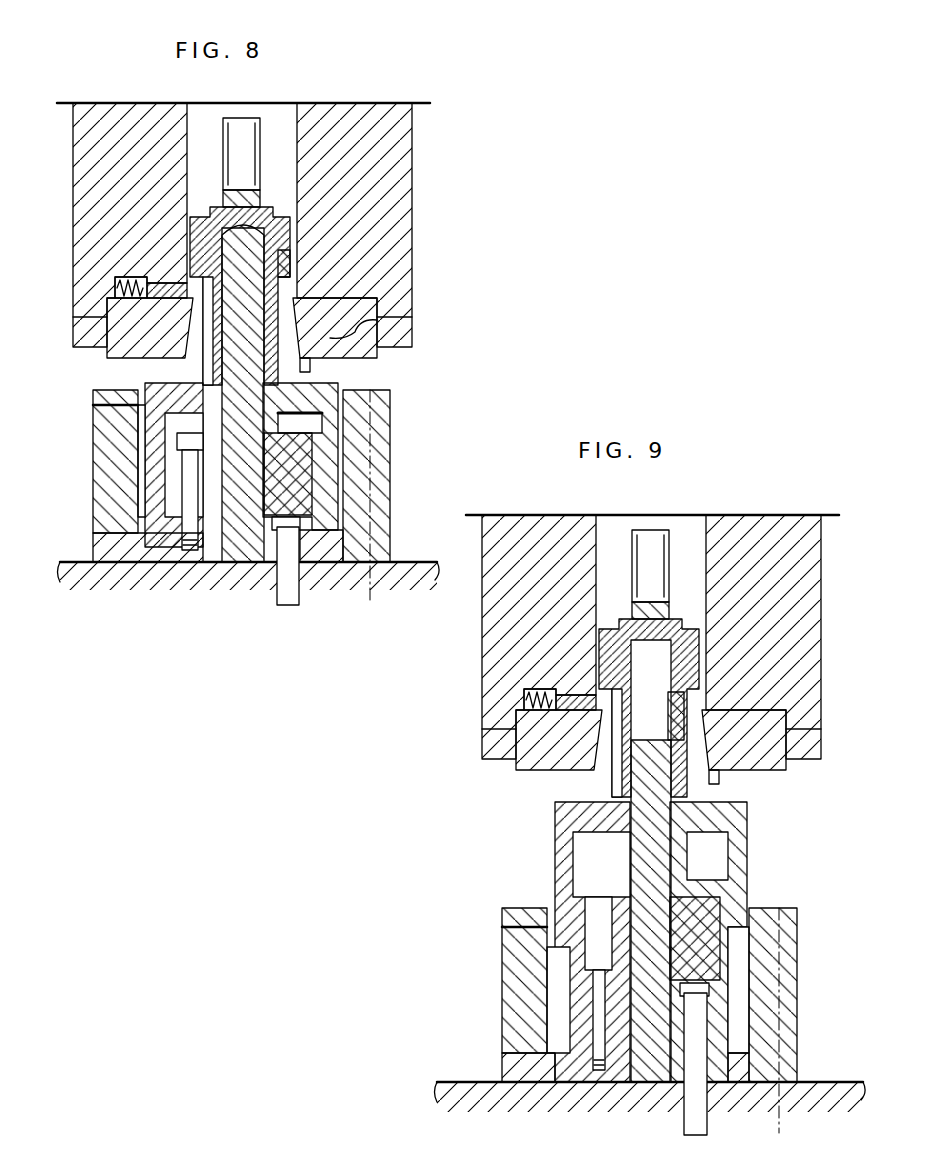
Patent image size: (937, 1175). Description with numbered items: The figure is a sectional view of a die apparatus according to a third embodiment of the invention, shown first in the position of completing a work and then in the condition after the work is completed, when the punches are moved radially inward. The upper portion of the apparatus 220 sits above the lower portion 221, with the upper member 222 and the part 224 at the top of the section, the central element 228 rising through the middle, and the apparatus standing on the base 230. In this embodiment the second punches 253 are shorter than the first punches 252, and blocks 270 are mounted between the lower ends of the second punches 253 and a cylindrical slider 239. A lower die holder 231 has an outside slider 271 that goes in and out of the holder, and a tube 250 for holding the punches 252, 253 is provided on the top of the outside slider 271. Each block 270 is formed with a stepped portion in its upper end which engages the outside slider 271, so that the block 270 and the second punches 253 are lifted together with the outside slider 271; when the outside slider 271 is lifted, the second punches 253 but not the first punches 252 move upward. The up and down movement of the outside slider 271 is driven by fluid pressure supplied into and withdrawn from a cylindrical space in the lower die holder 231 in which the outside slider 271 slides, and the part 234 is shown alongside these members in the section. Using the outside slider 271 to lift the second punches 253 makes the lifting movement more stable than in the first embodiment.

In FIG. 8, the upper die assembly 220 is at (54, 190).
In FIG. 9, the upper die assembly 220 is at (468, 664).
In FIG. 8, the lower die assembly 221 is at (80, 487).
In FIG. 9, the lower die assembly 221 is at (492, 965).
In FIG. 8, the upper die plate 222 is at (425, 106).
In FIG. 9, the upper die plate 222 is at (835, 520).
In FIG. 8, the die ring 224 is at (370, 362).
In FIG. 9, the die ring 224 is at (782, 712).
In FIG. 8, the punch sleeve 228 is at (290, 222).
In FIG. 9, the punch sleeve 228 is at (688, 634).
In FIG. 8, the base plate 230 is at (412, 566).
In FIG. 9, the base plate 230 is at (823, 1082).
In FIG. 8, the lower die holder 231 is at (388, 420).
In FIG. 9, the lower die holder 231 is at (797, 945).
In FIG. 8, the spring 234 is at (330, 290).
In FIG. 9, the spring 234 is at (700, 818).
In FIG. 8, the cylindrical slider 239 is at (305, 466).
In FIG. 9, the cylindrical slider 239 is at (750, 910).
In FIG. 8, the tube 250 is at (360, 326).
In FIG. 9, the tube 250 is at (572, 765).
In FIG. 8, the first punches 252 is at (300, 255).
In FIG. 9, the first punches 252 is at (690, 706).
In FIG. 8, the second punches 253 is at (186, 246).
In FIG. 9, the second punches 253 is at (605, 650).
In FIG. 8, the blocks 270 is at (150, 430).
In FIG. 9, the blocks 270 is at (605, 840).
In FIG. 8, the outside slider 271 is at (150, 383).
In FIG. 9, the outside slider 271 is at (556, 870).